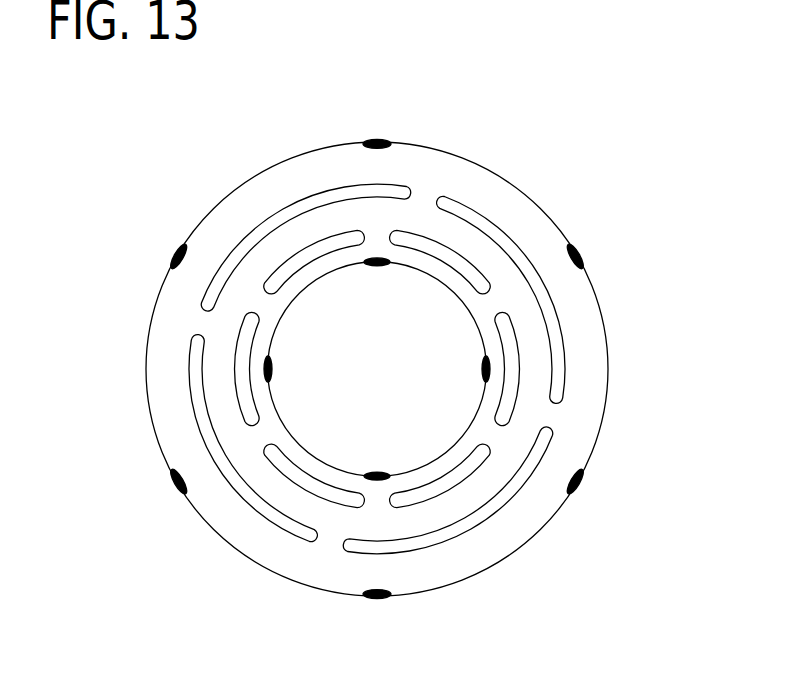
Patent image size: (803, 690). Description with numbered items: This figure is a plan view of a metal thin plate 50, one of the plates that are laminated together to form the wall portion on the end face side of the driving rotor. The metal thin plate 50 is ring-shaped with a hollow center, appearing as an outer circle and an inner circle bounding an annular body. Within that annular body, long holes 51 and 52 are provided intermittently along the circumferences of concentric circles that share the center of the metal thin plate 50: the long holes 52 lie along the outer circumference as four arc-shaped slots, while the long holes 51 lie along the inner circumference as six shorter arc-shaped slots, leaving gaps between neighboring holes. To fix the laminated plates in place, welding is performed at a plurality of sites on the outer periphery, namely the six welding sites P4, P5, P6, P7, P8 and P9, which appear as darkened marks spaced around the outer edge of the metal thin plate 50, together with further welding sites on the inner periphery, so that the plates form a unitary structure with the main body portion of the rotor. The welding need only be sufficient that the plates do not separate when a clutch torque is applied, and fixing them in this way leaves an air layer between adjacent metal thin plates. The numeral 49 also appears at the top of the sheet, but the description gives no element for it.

The pressure plate assembly 49 is at (305, 8).
The metal thin plate 50 is at (608, 372).
The long hole 51 is at (328, 245).
The long hole 52 is at (273, 218).
The welding site P4 is at (386, 146).
The welding site P5 is at (580, 257).
The welding site P6 is at (580, 484).
The welding site P7 is at (377, 598).
The welding site P8 is at (174, 481).
The welding site P9 is at (178, 262).